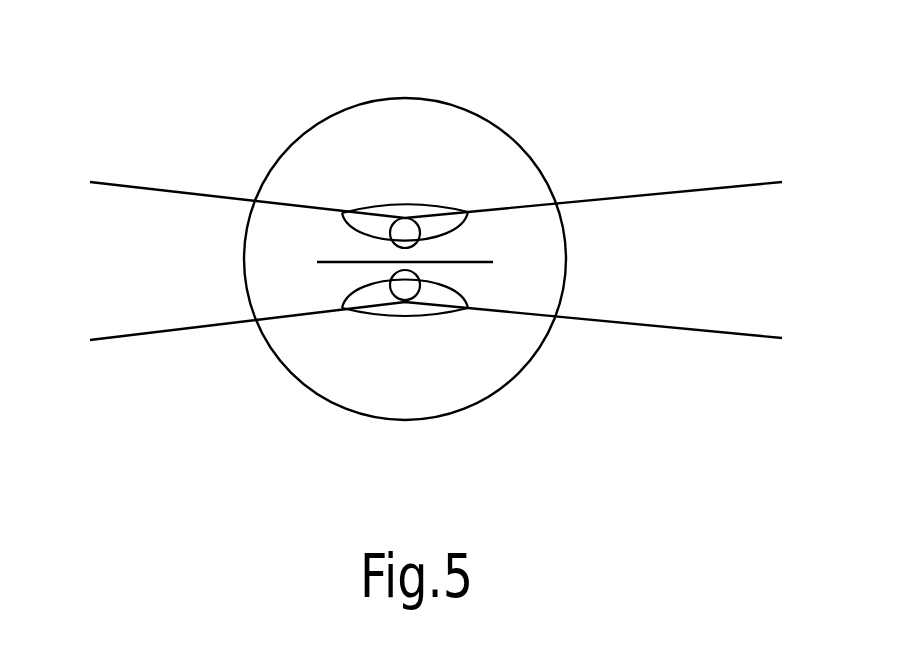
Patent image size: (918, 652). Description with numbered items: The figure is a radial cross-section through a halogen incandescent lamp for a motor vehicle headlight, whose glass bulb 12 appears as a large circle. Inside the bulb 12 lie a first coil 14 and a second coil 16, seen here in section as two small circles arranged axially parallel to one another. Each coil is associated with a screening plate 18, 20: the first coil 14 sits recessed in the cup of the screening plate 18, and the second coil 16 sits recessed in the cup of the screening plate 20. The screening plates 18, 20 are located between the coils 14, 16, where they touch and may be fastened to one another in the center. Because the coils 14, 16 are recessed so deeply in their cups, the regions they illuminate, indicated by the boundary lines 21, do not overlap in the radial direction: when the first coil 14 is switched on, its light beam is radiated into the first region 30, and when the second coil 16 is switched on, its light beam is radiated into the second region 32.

The glass bulb 12 is at (530, 155).
The first coil 14 is at (404, 227).
The second coil 16 is at (405, 291).
The screening plate 18 is at (453, 242).
The screening plate 20 is at (453, 283).
The boundary lines 21 is at (130, 188).
The first region 30 is at (431, 57).
The second region 32 is at (425, 497).